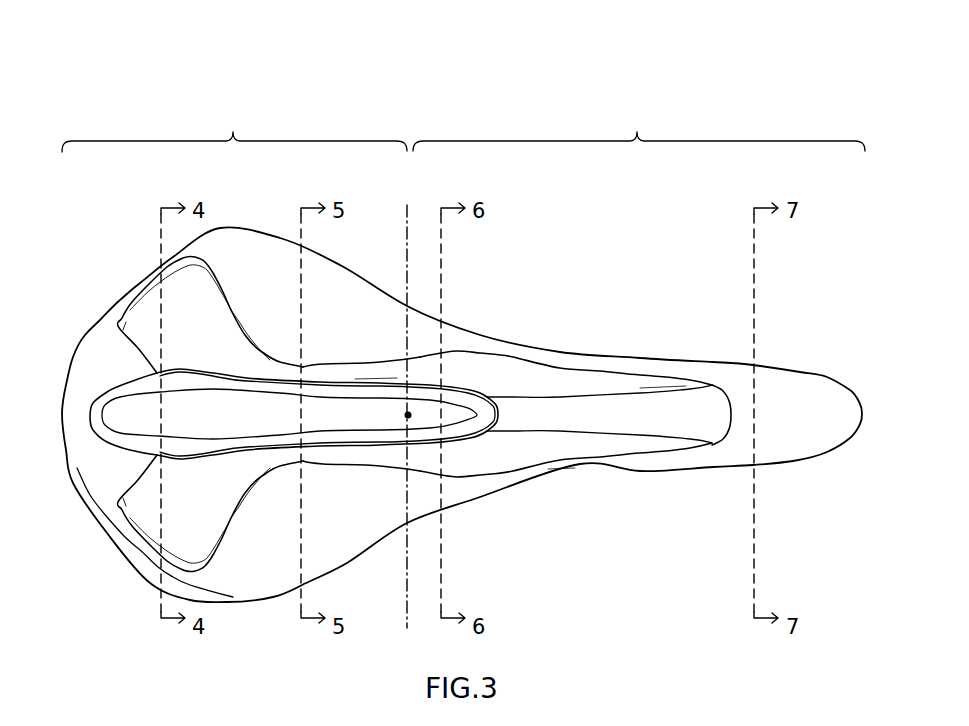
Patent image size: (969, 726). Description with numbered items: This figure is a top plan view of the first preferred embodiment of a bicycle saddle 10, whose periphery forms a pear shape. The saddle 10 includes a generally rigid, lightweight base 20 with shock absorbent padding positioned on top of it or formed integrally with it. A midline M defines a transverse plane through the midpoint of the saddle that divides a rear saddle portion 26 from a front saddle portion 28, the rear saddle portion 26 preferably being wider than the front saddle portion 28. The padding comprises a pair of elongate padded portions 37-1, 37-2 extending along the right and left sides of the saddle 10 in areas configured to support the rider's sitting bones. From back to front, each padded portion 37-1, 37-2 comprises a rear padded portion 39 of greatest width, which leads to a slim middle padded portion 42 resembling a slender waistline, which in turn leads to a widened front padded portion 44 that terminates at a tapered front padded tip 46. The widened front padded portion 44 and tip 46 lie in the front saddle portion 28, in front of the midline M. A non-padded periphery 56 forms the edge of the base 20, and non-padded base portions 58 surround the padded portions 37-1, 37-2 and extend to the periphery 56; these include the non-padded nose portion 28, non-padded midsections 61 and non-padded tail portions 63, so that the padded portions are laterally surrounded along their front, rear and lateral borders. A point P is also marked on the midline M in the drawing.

The bicycle saddle 10 is at (84, 63).
The base 20 is at (730, 376).
The rear saddle portion 26 is at (234, 130).
The front saddle portion 28 is at (818, 462).
The padded portion 37-1 is at (217, 553).
The padded portion 37-2 is at (217, 277).
The rear padded portion 39 is at (147, 282).
The slim middle padded portion 42 is at (319, 364).
The widened front padded portion 44 is at (470, 352).
The tapered front padded tip 46 is at (727, 415).
The non-padded periphery 56 is at (627, 472).
The non-padded base portions 58 is at (287, 288).
The non-padded midsections 61 is at (364, 295).
The non-padded tail portions 63 is at (100, 353).
The reference point P is at (404, 415).
The midline M is at (407, 418).